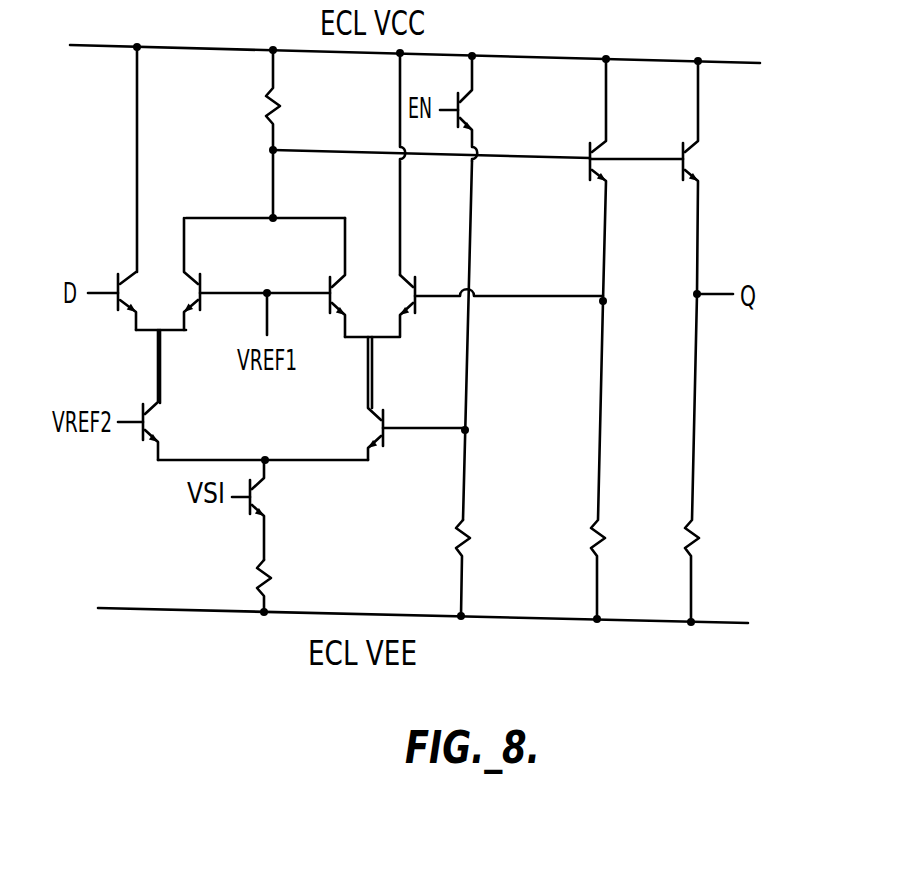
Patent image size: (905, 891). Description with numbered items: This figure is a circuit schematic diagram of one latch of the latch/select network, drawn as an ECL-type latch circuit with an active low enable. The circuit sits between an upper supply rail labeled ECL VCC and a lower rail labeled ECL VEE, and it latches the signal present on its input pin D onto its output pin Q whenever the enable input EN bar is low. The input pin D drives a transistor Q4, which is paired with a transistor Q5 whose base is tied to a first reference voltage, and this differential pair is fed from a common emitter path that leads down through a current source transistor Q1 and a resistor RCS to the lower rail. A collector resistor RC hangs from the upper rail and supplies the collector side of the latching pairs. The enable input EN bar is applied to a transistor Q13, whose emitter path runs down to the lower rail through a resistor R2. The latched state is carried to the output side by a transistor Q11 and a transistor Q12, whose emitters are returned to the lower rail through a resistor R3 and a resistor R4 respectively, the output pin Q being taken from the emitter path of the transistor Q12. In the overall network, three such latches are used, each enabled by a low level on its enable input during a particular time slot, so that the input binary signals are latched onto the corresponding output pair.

The input transistor Q4 is at (133, 301).
The reference transistor Q5 is at (184, 274).
The current source transistor Q1 is at (271, 510).
The output transistor Q11 is at (616, 180).
The output transistor Q12 is at (711, 177).
The enable transistor Q13 is at (483, 108).
The collector resistor RC is at (289, 100).
The current source resistor RCS is at (287, 584).
The resistor R2 is at (443, 567).
The resistor R3 is at (581, 460).
The resistor R4 is at (675, 458).